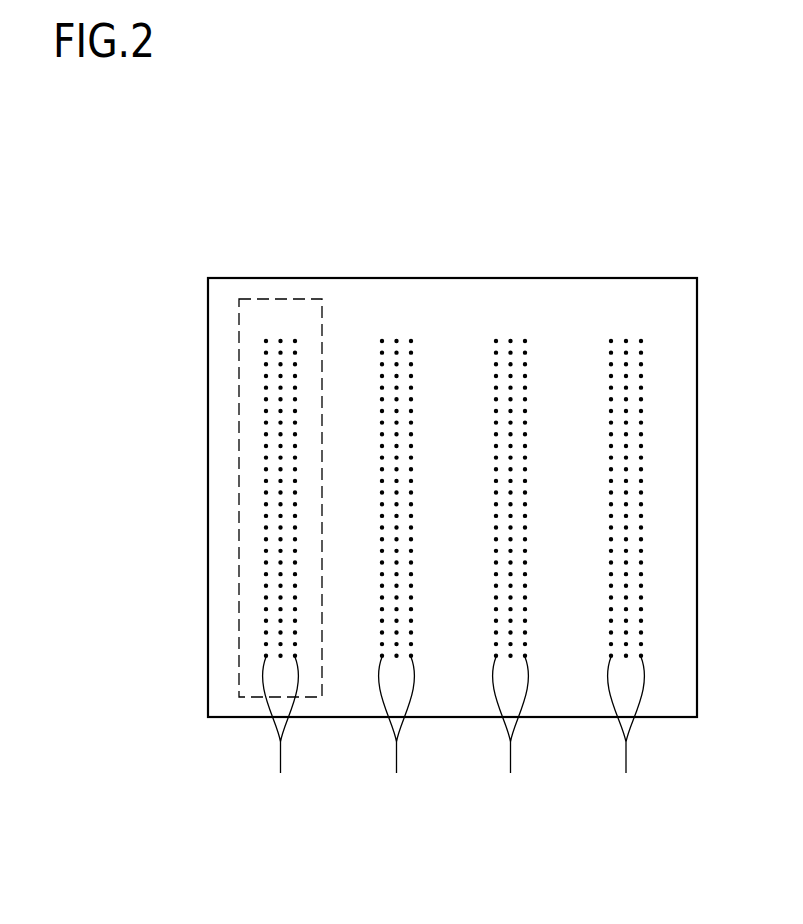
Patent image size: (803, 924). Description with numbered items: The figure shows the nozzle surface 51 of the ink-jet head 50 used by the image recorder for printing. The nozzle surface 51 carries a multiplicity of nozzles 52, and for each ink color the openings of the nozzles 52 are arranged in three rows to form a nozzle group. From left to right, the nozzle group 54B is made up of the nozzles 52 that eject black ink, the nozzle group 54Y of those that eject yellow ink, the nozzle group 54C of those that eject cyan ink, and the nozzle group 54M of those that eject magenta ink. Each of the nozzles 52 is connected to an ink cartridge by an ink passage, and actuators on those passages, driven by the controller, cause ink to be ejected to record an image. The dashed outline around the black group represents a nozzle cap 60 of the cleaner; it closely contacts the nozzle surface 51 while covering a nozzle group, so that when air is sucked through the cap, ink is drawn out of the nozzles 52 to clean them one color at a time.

The ink-jet head 50 is at (503, 138).
The nozzle surface 51 is at (352, 310).
The nozzles 52 is at (454, 731).
The nozzle group 54B is at (280, 325).
The nozzle group 54Y is at (398, 325).
The nozzle group 54C is at (513, 325).
The nozzle group 54M is at (627, 325).
The nozzle cap 60 is at (239, 495).